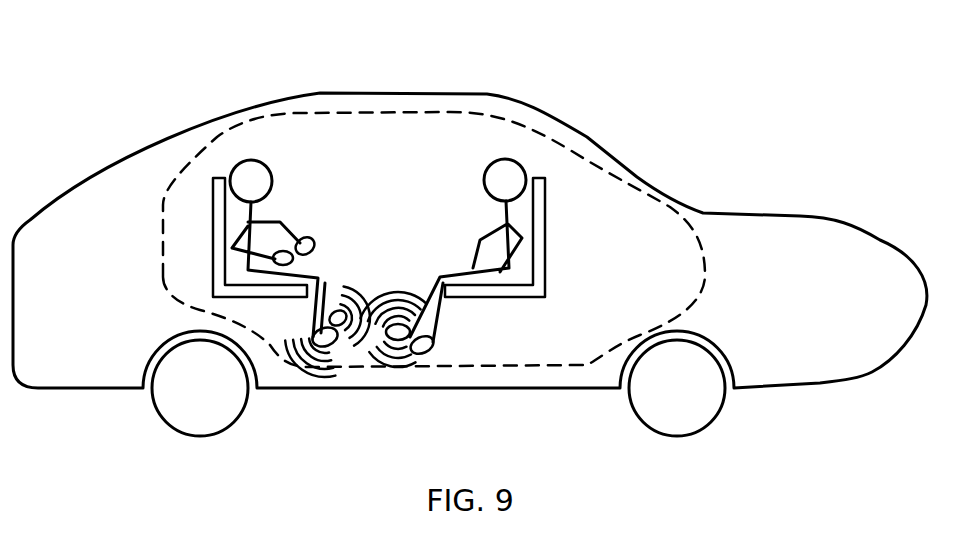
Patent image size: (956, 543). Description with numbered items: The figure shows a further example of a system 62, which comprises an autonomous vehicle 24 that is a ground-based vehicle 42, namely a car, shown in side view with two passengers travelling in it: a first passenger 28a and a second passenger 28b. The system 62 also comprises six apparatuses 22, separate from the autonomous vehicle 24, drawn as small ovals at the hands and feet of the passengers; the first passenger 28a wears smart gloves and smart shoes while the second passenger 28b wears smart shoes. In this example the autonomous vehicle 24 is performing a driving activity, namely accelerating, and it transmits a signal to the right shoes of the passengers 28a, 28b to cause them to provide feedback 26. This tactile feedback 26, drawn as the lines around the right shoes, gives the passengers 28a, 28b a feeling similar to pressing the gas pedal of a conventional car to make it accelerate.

The system 62 is at (805, 66).
The autonomous vehicle 24 is at (470, 228).
The ground-based vehicle 42 is at (171, 133).
The first passenger 28a is at (263, 162).
The second passenger 28b is at (493, 160).
The feedback 26 is at (394, 293).
The apparatus 22 is at (283, 251).